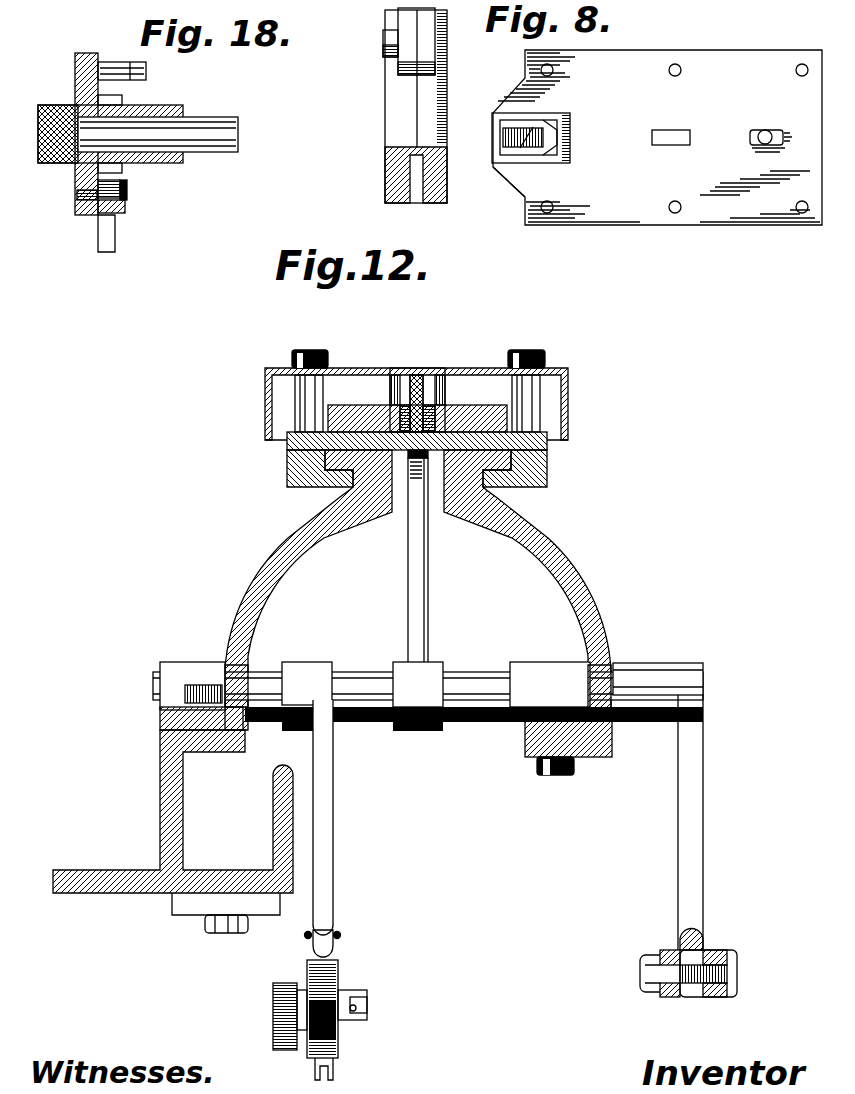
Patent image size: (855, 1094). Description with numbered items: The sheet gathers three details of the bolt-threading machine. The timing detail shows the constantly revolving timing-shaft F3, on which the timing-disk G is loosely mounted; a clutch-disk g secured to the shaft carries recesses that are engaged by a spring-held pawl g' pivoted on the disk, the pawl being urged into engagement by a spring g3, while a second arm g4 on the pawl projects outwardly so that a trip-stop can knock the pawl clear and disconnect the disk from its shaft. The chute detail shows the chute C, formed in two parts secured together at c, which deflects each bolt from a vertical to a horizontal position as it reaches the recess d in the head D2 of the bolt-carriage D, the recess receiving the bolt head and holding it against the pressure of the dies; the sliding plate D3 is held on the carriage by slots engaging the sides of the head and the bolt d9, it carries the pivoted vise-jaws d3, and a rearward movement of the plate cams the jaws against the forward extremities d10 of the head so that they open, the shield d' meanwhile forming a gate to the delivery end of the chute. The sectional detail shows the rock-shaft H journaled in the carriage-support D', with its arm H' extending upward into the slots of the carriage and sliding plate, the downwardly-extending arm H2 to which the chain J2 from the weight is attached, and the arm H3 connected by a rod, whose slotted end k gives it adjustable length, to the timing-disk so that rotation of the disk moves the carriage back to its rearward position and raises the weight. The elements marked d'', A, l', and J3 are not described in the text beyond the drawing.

In FIG. 18, the timing-disk G is at (76, 74).
In FIG. 18, the timing-shaft F3 is at (213, 117).
In FIG. 18, the clutch-disk g is at (125, 179).
In FIG. 18, the spring-held pawl g' is at (122, 208).
In FIG. 18, the spring g3 is at (112, 217).
In FIG. 18, the second arm of pawl g4 is at (103, 252).
In FIG. 8, the chute C is at (435, 112).
In FIG. 8, the chute securing point c is at (409, 41).
In FIG. 8, the bolt-carriage D is at (657, 137).
In FIG. 12, the bolt-carriage D is at (431, 418).
In FIG. 8, the forward extremities of head d10 is at (497, 147).
In FIG. 8, the recess d is at (547, 115).
In FIG. 8, the head of carriage D2 is at (571, 154).
In FIG. 8, the slot d'' is at (671, 123).
In FIG. 8, the bolt d9 is at (765, 131).
In FIG. 12, the pivoted vise-jaws d3 is at (407, 373).
In FIG. 12, the shield d' is at (418, 386).
In FIG. 12, the sliding plate D3 is at (462, 406).
In FIG. 12, the carriage-support D' is at (418, 590).
In FIG. 12, the arm of rock-shaft H' is at (404, 571).
In FIG. 12, the rock-shaft H is at (428, 679).
In FIG. 12, the downwardly-extending arm H2 is at (334, 765).
In FIG. 12, the frame bracket A is at (177, 833).
In FIG. 12, the arm H3 is at (678, 765).
In FIG. 12, the nut l' is at (660, 953).
In FIG. 12, the slotted end of rod K k is at (712, 952).
In FIG. 12, the chain J2 is at (335, 950).
In FIG. 12, the gear assembly J3 is at (325, 1000).